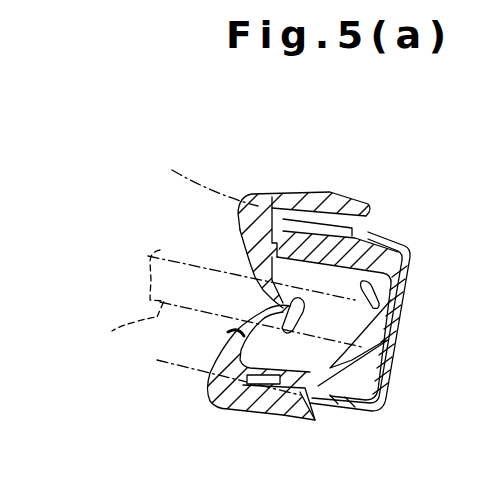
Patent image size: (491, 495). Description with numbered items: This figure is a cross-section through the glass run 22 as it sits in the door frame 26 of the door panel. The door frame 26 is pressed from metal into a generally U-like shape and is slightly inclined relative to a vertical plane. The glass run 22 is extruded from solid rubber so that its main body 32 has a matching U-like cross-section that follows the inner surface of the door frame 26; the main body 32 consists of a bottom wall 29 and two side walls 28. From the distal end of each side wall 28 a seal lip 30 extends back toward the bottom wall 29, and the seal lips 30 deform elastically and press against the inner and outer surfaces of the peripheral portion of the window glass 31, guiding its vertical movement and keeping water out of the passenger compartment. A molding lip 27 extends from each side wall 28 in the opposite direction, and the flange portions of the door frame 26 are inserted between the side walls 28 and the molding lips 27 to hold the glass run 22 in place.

The glass run 22 is at (247, 184).
The door frame 26 is at (383, 338).
The molding lip 27 is at (312, 191).
The side wall 28 is at (352, 236).
The bottom wall 29 is at (390, 347).
The seal lip 30 is at (257, 277).
The window glass 31 is at (128, 307).
The main body 32 is at (389, 303).